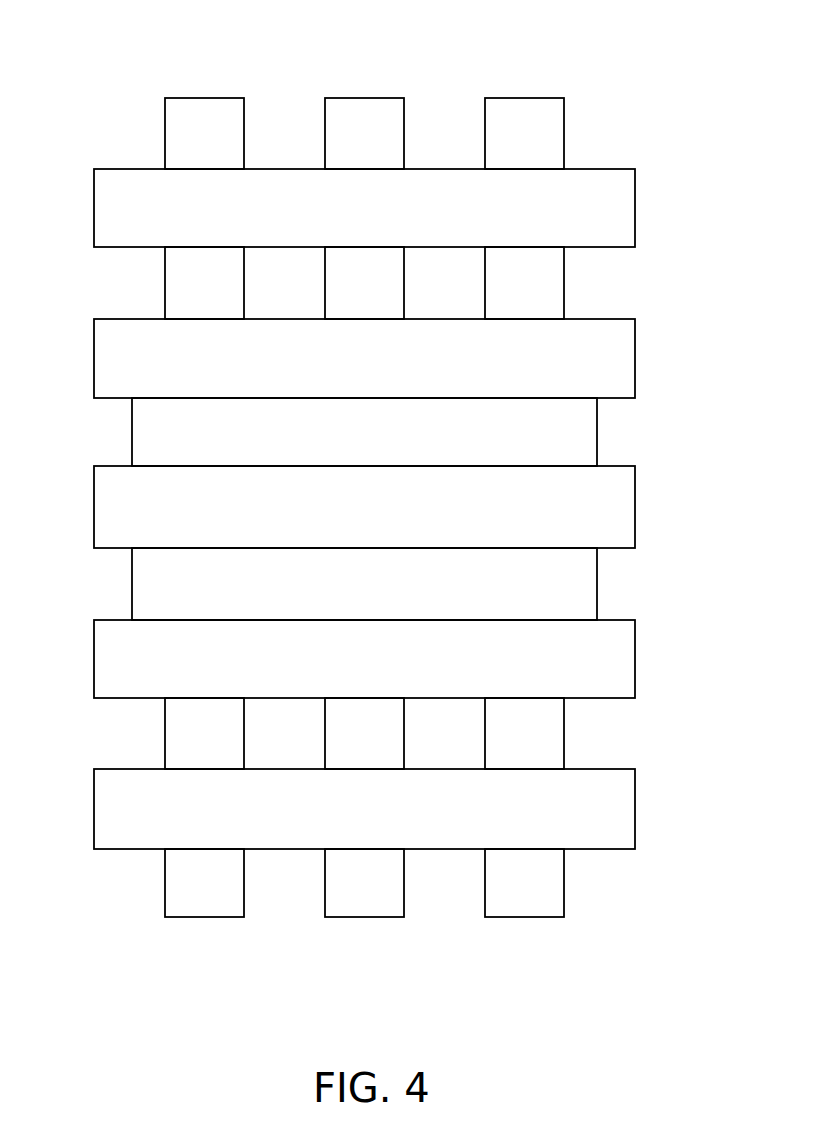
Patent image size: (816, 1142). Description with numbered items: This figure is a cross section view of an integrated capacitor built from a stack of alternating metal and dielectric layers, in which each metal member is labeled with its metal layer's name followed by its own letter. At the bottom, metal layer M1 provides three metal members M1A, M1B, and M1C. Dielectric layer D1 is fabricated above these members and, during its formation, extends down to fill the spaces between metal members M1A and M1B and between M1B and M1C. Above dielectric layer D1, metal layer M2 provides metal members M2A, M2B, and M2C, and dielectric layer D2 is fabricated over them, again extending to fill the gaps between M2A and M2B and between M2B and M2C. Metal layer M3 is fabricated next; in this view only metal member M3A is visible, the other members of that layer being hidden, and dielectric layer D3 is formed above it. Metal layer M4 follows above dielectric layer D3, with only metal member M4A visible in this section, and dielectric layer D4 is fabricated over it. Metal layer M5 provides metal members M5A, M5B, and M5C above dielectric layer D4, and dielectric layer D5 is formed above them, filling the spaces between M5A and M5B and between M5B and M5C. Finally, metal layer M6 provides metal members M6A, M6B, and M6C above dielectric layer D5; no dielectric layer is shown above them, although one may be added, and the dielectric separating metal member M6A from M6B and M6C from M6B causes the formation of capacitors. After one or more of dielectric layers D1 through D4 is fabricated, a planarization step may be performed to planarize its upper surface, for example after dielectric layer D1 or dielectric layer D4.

The metal layer M6 is at (430, 94).
The metal member M6A is at (200, 98).
The metal member M6B is at (362, 98).
The metal member M6C is at (522, 98).
The dielectric layer D5 is at (684, 219).
The metal layer M5 is at (430, 283).
The metal member M5A is at (244, 305).
The metal member M5B is at (404, 305).
The metal member M5C is at (564, 305).
The dielectric layer D4 is at (684, 361).
The metal layer M4 is at (382, 432).
The metal member M4A is at (132, 451).
The dielectric layer D3 is at (684, 517).
The metal layer M3 is at (382, 584).
The metal member M3A is at (132, 607).
The dielectric layer D2 is at (684, 669).
The metal layer M2 is at (430, 733).
The metal member M2A is at (244, 753).
The metal member M2B is at (440, 737).
The metal member M2C is at (600, 737).
The dielectric layer D1 is at (684, 819).
The metal layer M1 is at (426, 926).
The metal member M1A is at (203, 917).
The metal member M1B is at (367, 917).
The metal member M1C is at (523, 917).